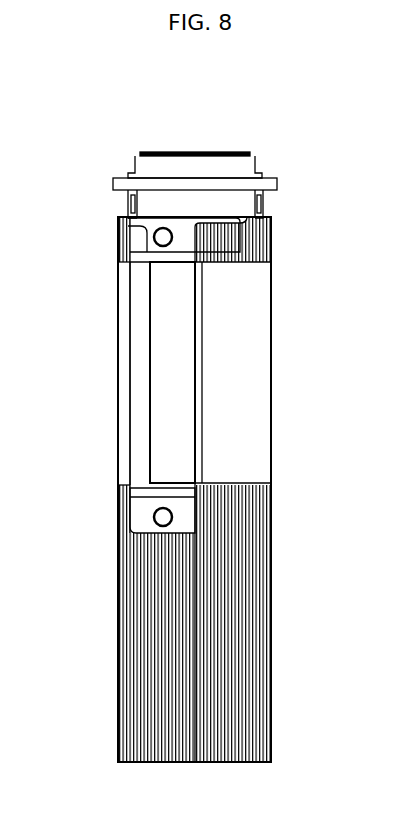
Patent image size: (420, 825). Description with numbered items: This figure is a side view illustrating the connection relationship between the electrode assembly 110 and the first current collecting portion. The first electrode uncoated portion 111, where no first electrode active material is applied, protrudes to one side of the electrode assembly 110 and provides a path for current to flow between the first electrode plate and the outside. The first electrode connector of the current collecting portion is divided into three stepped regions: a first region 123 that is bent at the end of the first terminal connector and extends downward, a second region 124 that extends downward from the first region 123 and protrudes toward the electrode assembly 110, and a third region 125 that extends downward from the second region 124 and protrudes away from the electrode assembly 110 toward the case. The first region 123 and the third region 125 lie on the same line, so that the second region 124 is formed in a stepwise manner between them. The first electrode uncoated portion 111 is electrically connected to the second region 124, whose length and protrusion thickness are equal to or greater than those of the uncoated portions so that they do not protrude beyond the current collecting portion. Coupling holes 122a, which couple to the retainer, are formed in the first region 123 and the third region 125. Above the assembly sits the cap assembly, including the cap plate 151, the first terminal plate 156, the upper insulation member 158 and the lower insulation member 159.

The electrode assembly 110 is at (277, 641).
The first electrode uncoated portion 111 is at (165, 415).
The coupling holes 122a is at (163, 224).
The first region 123 is at (133, 245).
The second region 124 is at (133, 348).
The third region 125 is at (135, 508).
The cap plate 151 is at (277, 183).
The first terminal plate 156 is at (177, 153).
The upper insulation member 158 is at (220, 165).
The lower insulation member 159 is at (233, 202).